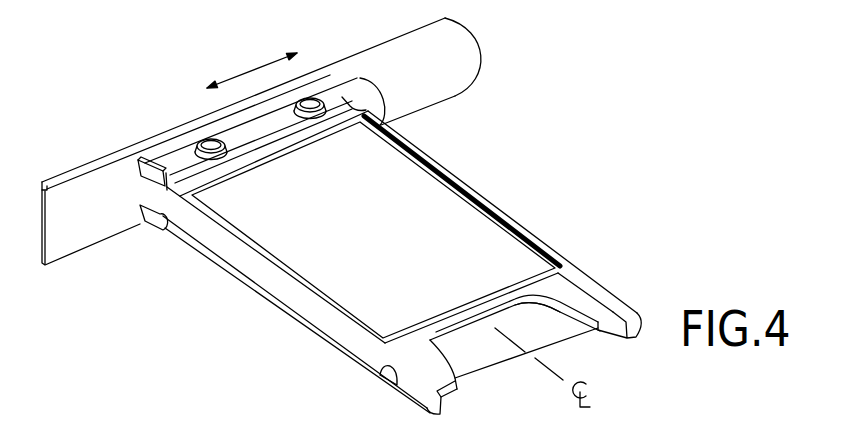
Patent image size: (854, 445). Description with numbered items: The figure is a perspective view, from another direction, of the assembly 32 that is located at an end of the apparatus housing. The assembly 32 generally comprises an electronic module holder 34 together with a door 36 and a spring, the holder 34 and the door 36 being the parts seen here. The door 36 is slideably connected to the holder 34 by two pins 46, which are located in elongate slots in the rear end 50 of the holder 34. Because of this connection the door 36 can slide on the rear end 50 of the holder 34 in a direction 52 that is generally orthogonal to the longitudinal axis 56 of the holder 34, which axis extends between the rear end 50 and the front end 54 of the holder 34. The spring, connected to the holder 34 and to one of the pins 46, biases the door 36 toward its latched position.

The assembly 32 is at (88, 130).
The electronic module holder 34 is at (513, 223).
The door 36 is at (474, 82).
The pins 46 is at (200, 146).
The rear end 50 is at (152, 193).
The direction 52 is at (252, 70).
The front end 54 is at (453, 382).
The longitudinal axis 56 is at (531, 353).